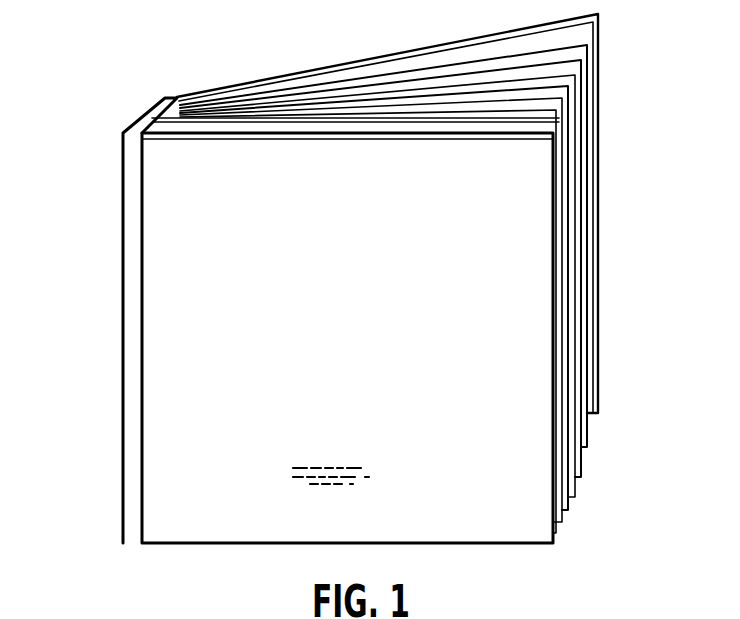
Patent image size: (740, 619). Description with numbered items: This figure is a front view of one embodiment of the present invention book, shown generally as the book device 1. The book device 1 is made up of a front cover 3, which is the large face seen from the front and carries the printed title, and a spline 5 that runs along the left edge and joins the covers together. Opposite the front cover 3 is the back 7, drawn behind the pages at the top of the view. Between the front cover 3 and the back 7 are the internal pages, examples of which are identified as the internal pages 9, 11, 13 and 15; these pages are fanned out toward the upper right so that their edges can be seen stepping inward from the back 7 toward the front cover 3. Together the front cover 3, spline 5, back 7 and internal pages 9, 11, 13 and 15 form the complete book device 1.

The book device 1 is at (98, 254).
The front cover 3 is at (158, 410).
The spline 5 is at (135, 124).
The back 7 is at (309, 68).
The internal page 9 is at (568, 42).
The internal page 11 is at (583, 98).
The internal page 13 is at (567, 111).
The internal page 15 is at (555, 172).